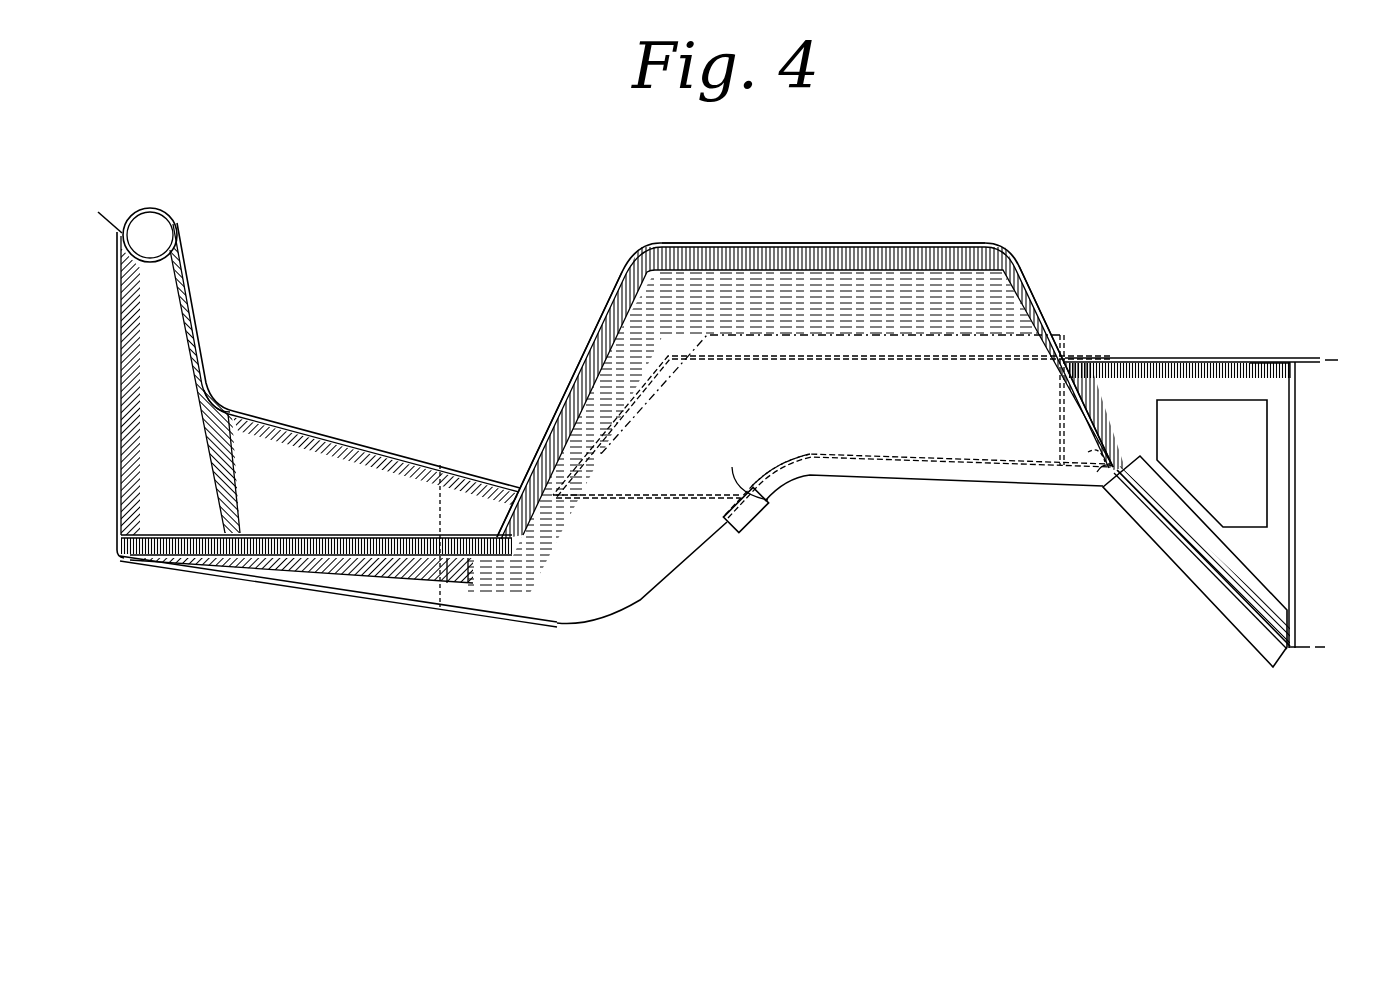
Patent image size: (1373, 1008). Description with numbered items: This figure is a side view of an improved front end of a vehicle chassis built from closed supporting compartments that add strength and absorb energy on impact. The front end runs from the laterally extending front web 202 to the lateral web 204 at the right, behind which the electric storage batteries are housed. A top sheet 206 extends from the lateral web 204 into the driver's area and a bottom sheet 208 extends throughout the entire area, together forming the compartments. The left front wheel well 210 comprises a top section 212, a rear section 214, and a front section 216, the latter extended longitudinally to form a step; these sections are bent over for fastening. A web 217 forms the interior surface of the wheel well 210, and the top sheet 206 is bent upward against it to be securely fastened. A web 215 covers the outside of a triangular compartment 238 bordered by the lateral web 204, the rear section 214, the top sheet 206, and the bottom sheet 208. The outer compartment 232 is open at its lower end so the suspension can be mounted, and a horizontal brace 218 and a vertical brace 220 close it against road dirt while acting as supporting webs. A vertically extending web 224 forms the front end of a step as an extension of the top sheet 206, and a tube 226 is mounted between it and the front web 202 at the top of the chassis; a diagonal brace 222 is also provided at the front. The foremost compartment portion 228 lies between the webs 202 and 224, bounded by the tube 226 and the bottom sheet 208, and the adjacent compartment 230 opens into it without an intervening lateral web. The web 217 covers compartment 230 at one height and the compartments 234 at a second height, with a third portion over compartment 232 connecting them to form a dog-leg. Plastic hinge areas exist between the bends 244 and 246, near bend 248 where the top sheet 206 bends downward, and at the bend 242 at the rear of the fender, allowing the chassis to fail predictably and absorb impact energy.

The front web 202 is at (117, 307).
The lateral web 204 is at (1296, 534).
The top sheet 206 is at (307, 432).
The bottom sheet 208 is at (368, 594).
The wheel well 210 is at (902, 240).
The top section 212 is at (730, 242).
The rear section 214 is at (1034, 292).
The web 215 is at (1258, 379).
The front section 216 is at (600, 321).
The web 217 is at (740, 532).
The horizontal brace 218 is at (666, 499).
The vertical brace 220 is at (440, 508).
The diagonal brace 222 is at (318, 567).
The vertically extending web 224 is at (212, 409).
The tube 226 is at (163, 219).
The foremost portion of longitudinal compartments 228 is at (148, 452).
The compartment 230 is at (254, 438).
The outer compartment 232 is at (621, 586).
The compartments 234 is at (840, 442).
The compartment 238 is at (1261, 553).
The bend 242 is at (1103, 489).
The bend 244 is at (600, 626).
The bend 246 is at (553, 494).
The bend 248 is at (789, 459).